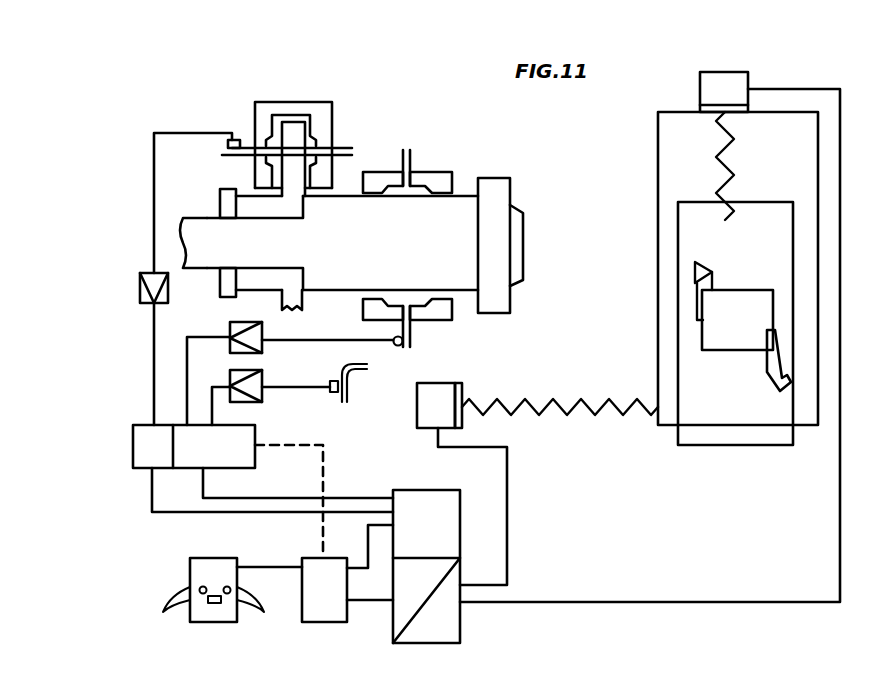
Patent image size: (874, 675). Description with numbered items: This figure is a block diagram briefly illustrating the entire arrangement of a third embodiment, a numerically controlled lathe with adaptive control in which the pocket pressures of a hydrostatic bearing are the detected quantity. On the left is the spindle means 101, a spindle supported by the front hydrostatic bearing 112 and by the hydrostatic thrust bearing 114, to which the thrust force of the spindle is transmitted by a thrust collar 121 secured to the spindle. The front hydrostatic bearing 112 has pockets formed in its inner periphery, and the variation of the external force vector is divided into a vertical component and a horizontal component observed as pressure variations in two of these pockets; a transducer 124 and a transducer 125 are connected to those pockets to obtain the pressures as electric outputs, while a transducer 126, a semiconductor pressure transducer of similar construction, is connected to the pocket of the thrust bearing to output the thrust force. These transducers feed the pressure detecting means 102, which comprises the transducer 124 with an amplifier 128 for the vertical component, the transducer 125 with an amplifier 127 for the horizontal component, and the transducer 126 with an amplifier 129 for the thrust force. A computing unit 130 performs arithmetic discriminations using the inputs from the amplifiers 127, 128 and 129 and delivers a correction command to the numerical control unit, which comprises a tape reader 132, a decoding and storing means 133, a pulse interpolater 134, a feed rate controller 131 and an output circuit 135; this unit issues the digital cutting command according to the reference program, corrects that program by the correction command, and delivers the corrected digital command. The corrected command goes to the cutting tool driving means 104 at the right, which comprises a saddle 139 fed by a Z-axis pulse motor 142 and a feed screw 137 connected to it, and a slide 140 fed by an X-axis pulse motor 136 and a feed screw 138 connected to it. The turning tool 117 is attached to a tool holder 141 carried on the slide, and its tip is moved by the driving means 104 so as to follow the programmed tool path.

The spindle means 101 is at (516, 170).
The pressure detecting means 102 is at (127, 312).
The cutting tool driving means 104 is at (835, 611).
The front hydrostatic bearing 112 is at (383, 178).
The hydrostatic thrust bearing 114 is at (270, 110).
The turning tool 117 is at (713, 276).
The thrust collar 121 is at (247, 199).
The transducer 124 is at (397, 352).
The transducer 125 is at (334, 400).
The transducer 126 is at (230, 144).
The amplifier 127 is at (262, 395).
The amplifier 128 is at (262, 345).
The amplifier 129 is at (140, 291).
The computing unit 130 is at (242, 455).
The feed rate controller 131 is at (424, 503).
The tape reader 132 is at (215, 614).
The decoding and storing means 133 is at (329, 614).
The pulse interpolater 134 is at (403, 610).
The output circuit 135 is at (440, 636).
The X-axis pulse motor 136 is at (717, 78).
The feed screw 137 is at (597, 400).
The feed screw 138 is at (735, 152).
The saddle 139 is at (658, 165).
The slide 140 is at (726, 448).
The tool holder 141 is at (730, 345).
The Z-axis pulse motor 142 is at (447, 390).